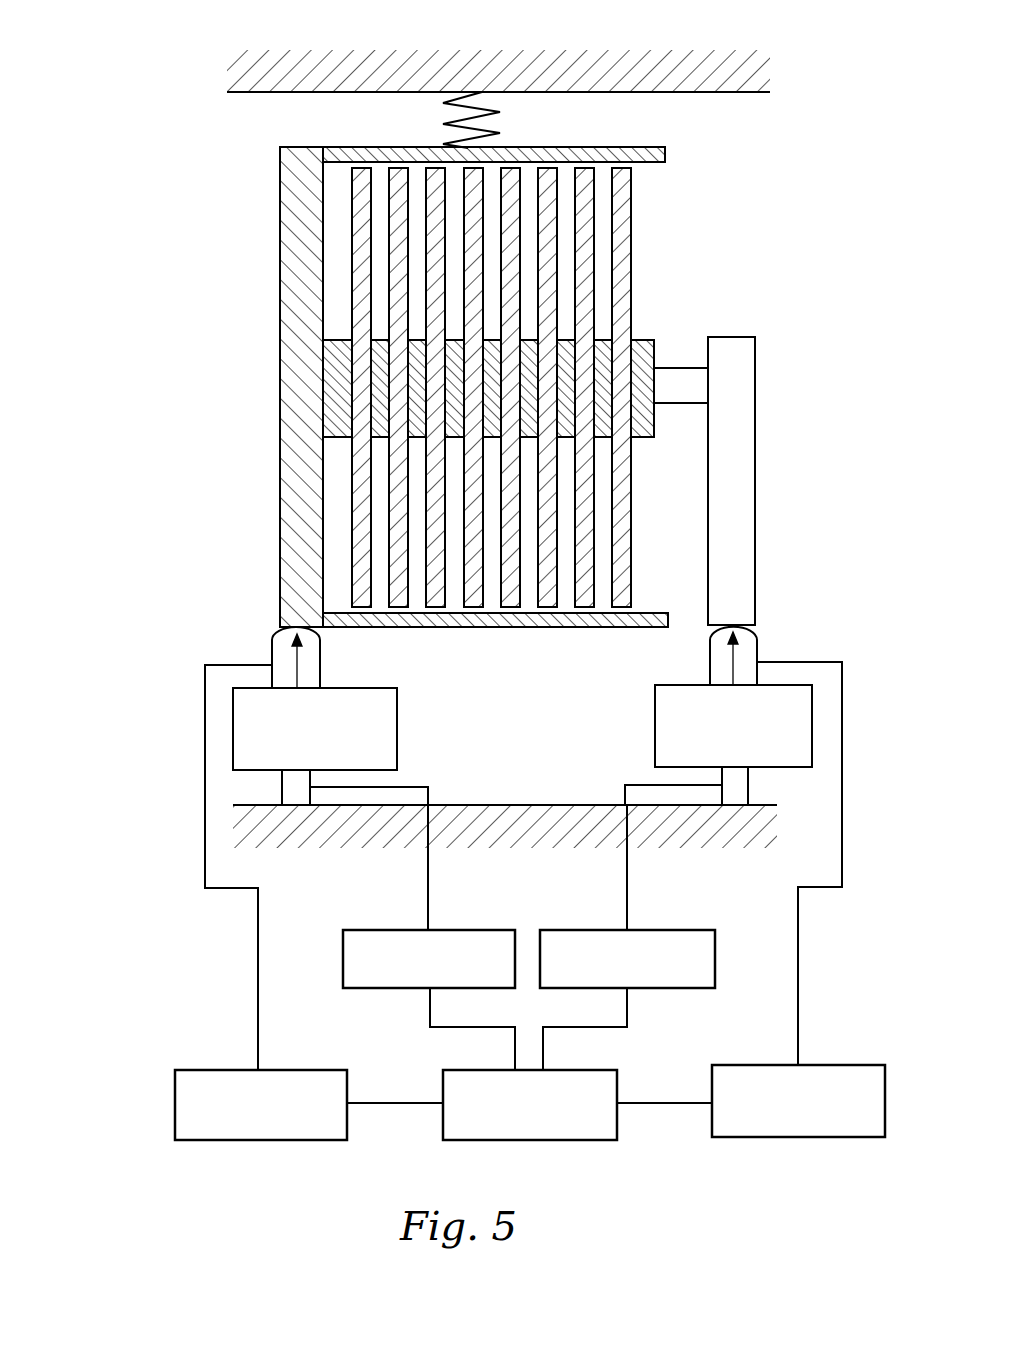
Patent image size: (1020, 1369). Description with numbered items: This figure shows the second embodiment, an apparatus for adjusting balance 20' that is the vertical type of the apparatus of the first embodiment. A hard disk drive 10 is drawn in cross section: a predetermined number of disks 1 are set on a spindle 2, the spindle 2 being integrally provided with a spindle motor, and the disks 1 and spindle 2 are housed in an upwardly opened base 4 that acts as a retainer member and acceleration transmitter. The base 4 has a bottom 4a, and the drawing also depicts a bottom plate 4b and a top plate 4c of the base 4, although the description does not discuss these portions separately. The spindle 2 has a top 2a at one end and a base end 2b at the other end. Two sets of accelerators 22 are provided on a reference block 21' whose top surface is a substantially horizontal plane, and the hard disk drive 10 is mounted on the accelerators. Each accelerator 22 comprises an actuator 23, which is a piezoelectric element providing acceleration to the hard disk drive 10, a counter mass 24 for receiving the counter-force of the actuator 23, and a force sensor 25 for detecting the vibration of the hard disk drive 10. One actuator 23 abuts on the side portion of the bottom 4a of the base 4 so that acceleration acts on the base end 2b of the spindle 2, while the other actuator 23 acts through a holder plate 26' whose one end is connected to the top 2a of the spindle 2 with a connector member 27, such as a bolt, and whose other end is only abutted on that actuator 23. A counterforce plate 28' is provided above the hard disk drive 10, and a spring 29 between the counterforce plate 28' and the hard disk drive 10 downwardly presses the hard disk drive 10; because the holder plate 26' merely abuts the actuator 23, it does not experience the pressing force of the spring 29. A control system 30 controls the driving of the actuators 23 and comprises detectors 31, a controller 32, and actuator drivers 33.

The disk 1 is at (585, 226).
The spindle 2 is at (448, 385).
The top of the spindle 2a is at (645, 415).
The base end of the spindle 2b is at (335, 415).
The base 4 is at (298, 378).
The bottom of the base 4a is at (296, 553).
The frame bottom plate 4b is at (483, 627).
The frame top plate 4c is at (552, 150).
The hard disk drive 10 is at (414, 388).
The apparatus for adjusting balance 20' is at (778, 485).
The reference block 21' is at (505, 847).
The accelerator 22 is at (417, 708).
The actuator 23 is at (282, 648).
The counter mass 24 is at (248, 712).
The force sensor 25 is at (446, 781).
The holder plate 26' is at (766, 481).
The connector member 27 is at (680, 365).
The counterforce plate 28' is at (498, 51).
The spring 29 is at (460, 106).
The control system 30 is at (501, 901).
The detector 31 is at (372, 930).
The controller 32 is at (617, 1090).
The actuator driver 33 is at (203, 1070).